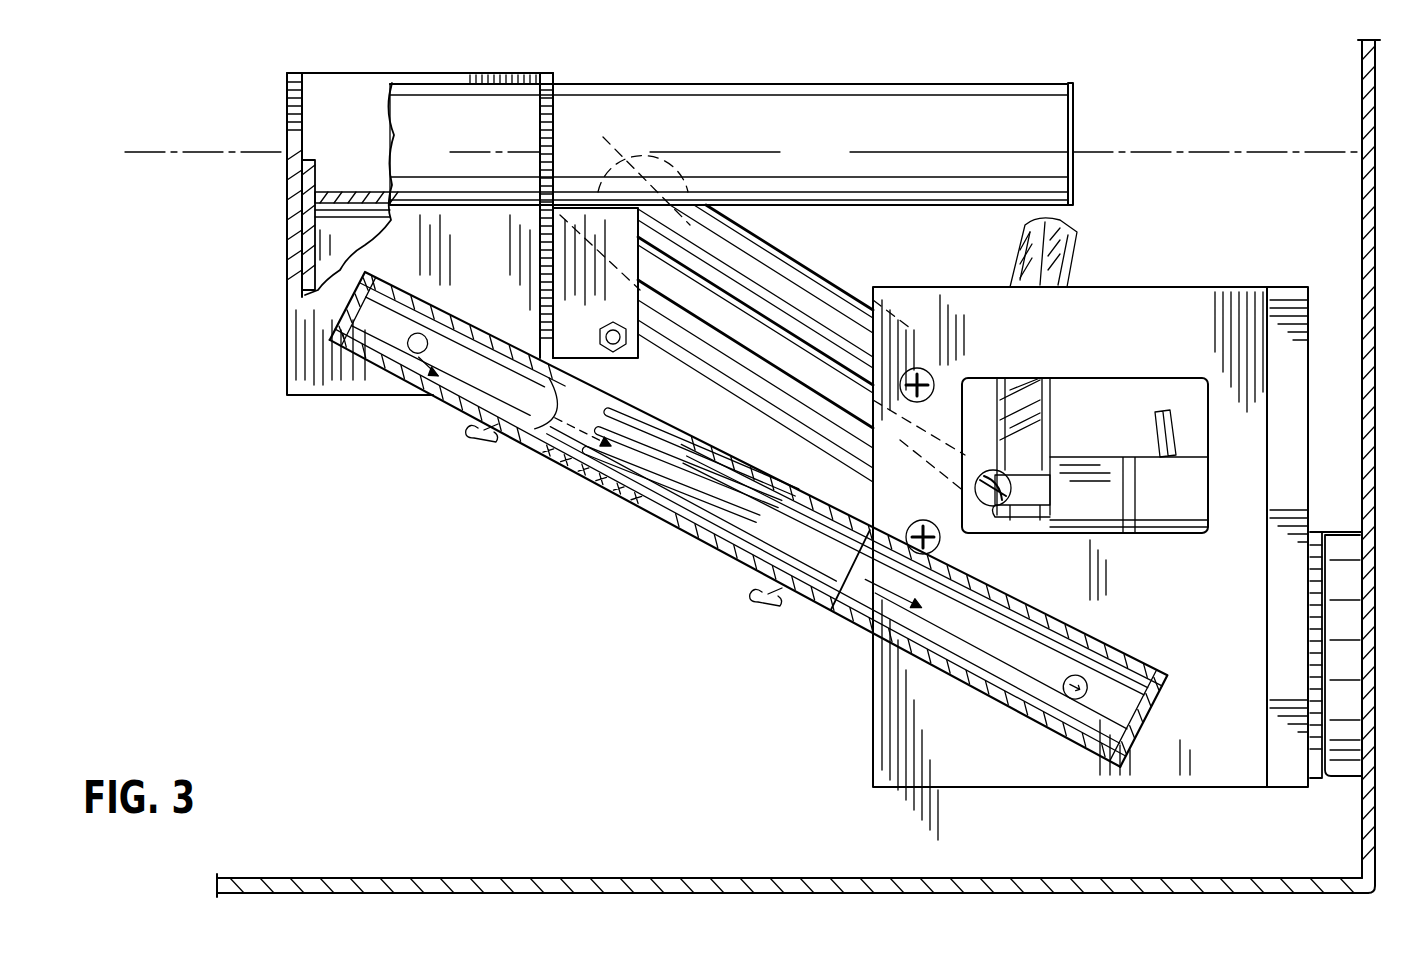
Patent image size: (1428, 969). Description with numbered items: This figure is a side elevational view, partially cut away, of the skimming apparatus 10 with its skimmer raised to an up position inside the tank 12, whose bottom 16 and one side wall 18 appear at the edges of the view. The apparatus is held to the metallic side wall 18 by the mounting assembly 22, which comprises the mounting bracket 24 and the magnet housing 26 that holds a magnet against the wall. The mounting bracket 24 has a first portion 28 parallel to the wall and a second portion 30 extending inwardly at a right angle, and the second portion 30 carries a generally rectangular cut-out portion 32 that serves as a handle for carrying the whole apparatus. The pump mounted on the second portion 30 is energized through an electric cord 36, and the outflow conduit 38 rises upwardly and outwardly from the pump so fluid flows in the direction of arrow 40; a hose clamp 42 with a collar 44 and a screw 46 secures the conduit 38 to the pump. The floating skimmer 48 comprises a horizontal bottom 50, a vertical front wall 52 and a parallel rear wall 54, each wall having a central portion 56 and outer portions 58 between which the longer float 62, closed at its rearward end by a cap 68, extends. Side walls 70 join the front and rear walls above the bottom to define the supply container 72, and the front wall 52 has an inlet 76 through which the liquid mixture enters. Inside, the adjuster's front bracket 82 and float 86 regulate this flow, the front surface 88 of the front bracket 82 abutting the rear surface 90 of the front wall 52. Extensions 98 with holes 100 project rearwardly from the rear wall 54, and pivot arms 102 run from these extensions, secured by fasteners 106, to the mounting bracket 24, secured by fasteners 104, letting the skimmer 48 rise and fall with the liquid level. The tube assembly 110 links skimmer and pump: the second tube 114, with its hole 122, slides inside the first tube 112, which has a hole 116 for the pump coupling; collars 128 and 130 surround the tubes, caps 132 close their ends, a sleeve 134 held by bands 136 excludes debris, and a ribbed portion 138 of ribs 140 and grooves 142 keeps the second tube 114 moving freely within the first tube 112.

The skimming apparatus 10 is at (1226, 78).
The tank 12 is at (1388, 104).
The bottom 16 is at (545, 880).
The side wall 18 is at (1362, 198).
The mounting assembly 22 is at (1170, 271).
The mounting bracket 24 is at (1200, 292).
The magnet housing 26 is at (1340, 530).
The first portion 28 is at (1268, 618).
The second portion 30 is at (1158, 352).
The cut-out portion 32 is at (1184, 530).
The electric cord 36 is at (1162, 428).
The outflow conduit 38 is at (1072, 252).
The arrow 40 is at (1090, 172).
The hose clamp 42 is at (1050, 498).
The collar 44 is at (1045, 478).
The screw 46 is at (978, 480).
The floating skimmer 48 is at (426, 66).
The bottom 50 is at (352, 394).
The front wall 52 is at (287, 338).
The rear wall 54 is at (560, 302).
The central portion 56 is at (289, 266).
The outer portion 58 is at (548, 105).
The float 62 is at (826, 164).
The cap 68 is at (1076, 115).
The side wall 70 is at (498, 252).
The supply container 72 is at (343, 101).
The inlet 76 is at (289, 213).
The front bracket 82 is at (340, 184).
The float 86 is at (380, 210).
The front surface 88 is at (289, 190).
The rear surface 90 is at (318, 145).
The extension 98 is at (630, 275).
The hole 100 is at (640, 152).
The pivot arm 102 is at (762, 340).
The fastener 104 is at (922, 378).
The fastener 106 is at (626, 350).
The tube assembly 110 is at (703, 594).
The first tube 112 is at (1006, 702).
The second tube 114 is at (417, 292).
The hole 116 is at (1068, 680).
The hole 122 is at (428, 335).
The collar 128 is at (788, 604).
The collar 130 is at (522, 455).
The cap 132 is at (1165, 702).
The sleeve 134 is at (594, 492).
The band 136 is at (480, 437).
The ribbed portion 138 is at (625, 523).
The rib 140 is at (658, 428).
The groove 142 is at (690, 515).